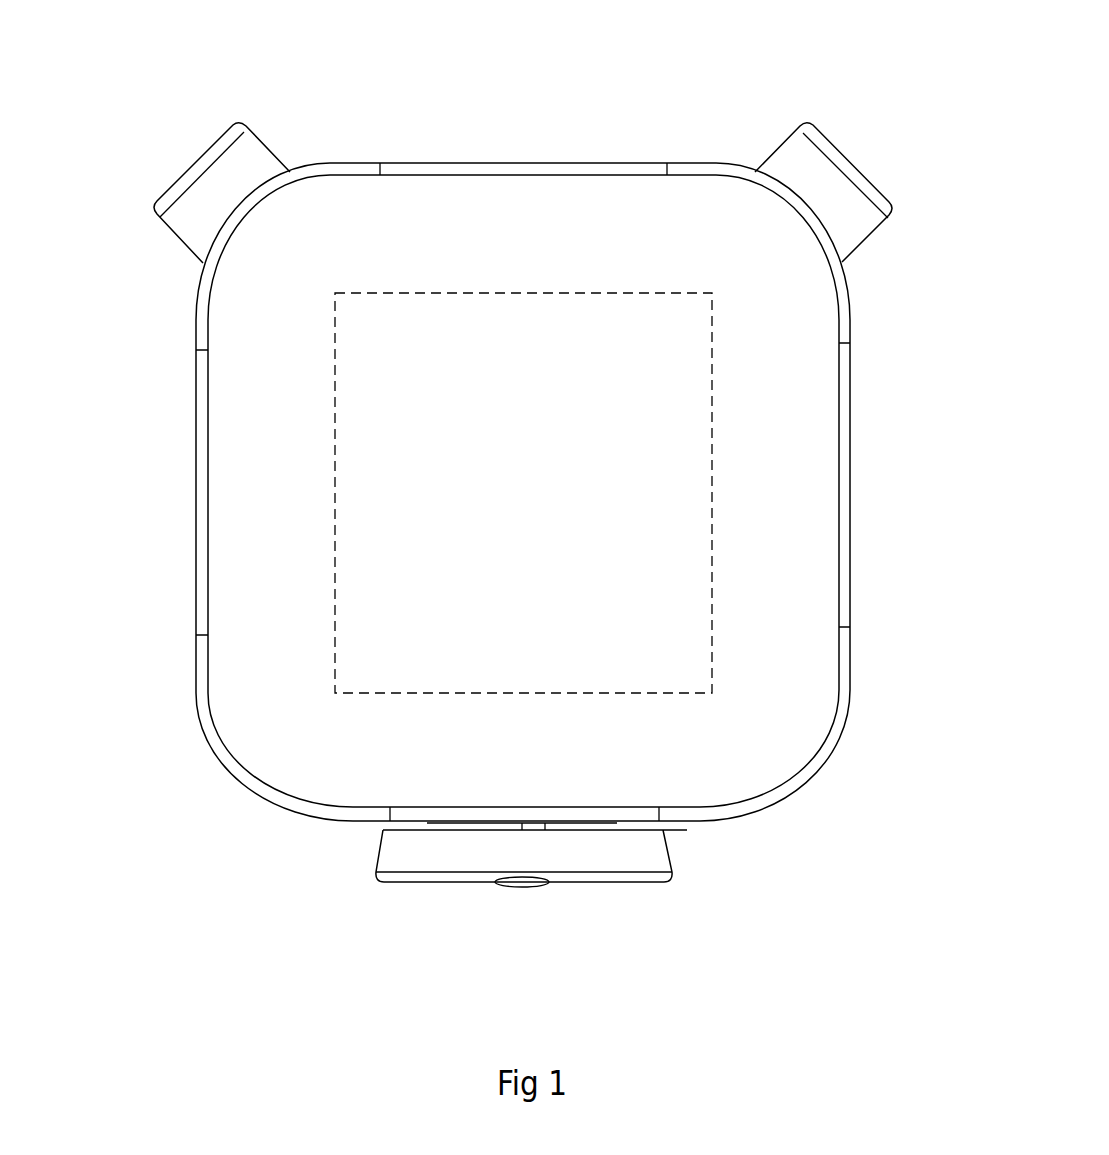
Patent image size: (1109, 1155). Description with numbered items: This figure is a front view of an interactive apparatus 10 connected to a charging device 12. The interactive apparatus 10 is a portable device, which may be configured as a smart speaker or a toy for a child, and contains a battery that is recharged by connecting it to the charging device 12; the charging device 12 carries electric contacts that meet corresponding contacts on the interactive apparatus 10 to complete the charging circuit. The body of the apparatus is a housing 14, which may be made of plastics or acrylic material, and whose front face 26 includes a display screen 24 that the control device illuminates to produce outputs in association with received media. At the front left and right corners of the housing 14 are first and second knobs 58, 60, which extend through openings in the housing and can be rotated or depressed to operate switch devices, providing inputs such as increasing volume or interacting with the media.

The interactive apparatus 10 is at (665, 128).
The charging device 12 is at (632, 857).
The housing 14 is at (850, 492).
The display screen 24 is at (438, 293).
The front face 26 is at (247, 362).
The first knob 58 is at (212, 177).
The second knob 60 is at (856, 165).